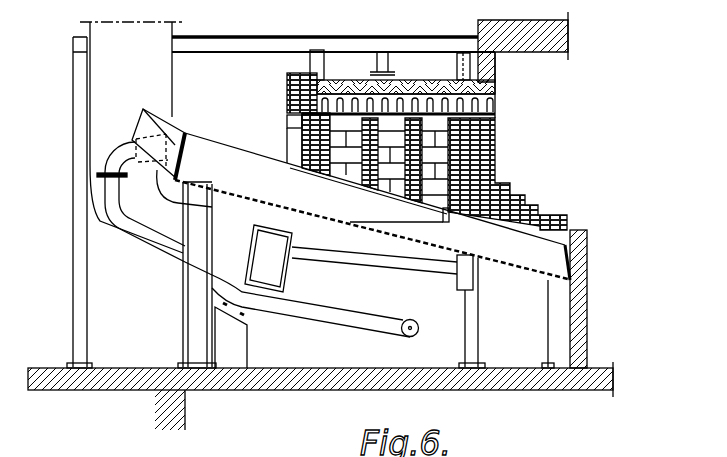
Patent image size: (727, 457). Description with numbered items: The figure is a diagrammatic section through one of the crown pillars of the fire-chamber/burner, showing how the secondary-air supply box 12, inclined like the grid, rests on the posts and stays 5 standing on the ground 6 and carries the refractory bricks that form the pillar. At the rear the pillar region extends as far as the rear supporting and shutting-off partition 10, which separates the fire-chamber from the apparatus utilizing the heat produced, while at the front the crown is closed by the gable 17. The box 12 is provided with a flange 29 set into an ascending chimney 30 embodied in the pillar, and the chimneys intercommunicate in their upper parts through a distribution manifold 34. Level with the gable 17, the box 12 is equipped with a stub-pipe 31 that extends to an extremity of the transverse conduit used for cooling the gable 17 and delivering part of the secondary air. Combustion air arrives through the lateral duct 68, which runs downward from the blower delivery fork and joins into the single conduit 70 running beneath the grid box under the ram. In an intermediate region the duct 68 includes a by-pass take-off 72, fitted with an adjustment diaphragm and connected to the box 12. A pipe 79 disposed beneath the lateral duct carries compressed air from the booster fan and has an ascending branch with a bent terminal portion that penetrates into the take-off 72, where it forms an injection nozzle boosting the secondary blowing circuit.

The posts and stays 5 is at (479, 327).
The ground 6 is at (342, 375).
The rear supporting and shutting-off partition 10 is at (588, 258).
The secondary-air supply box 12 is at (215, 167).
The gable 17 is at (287, 93).
The flange 29 is at (447, 221).
The ascending chimney 30 is at (440, 153).
The stub-pipe 31 is at (282, 166).
The distribution manifold 34 is at (492, 104).
The lateral duct 68 is at (160, 98).
The single conduit 70 is at (351, 258).
The by-pass take-off 72 is at (156, 122).
The pipe 79 is at (148, 231).